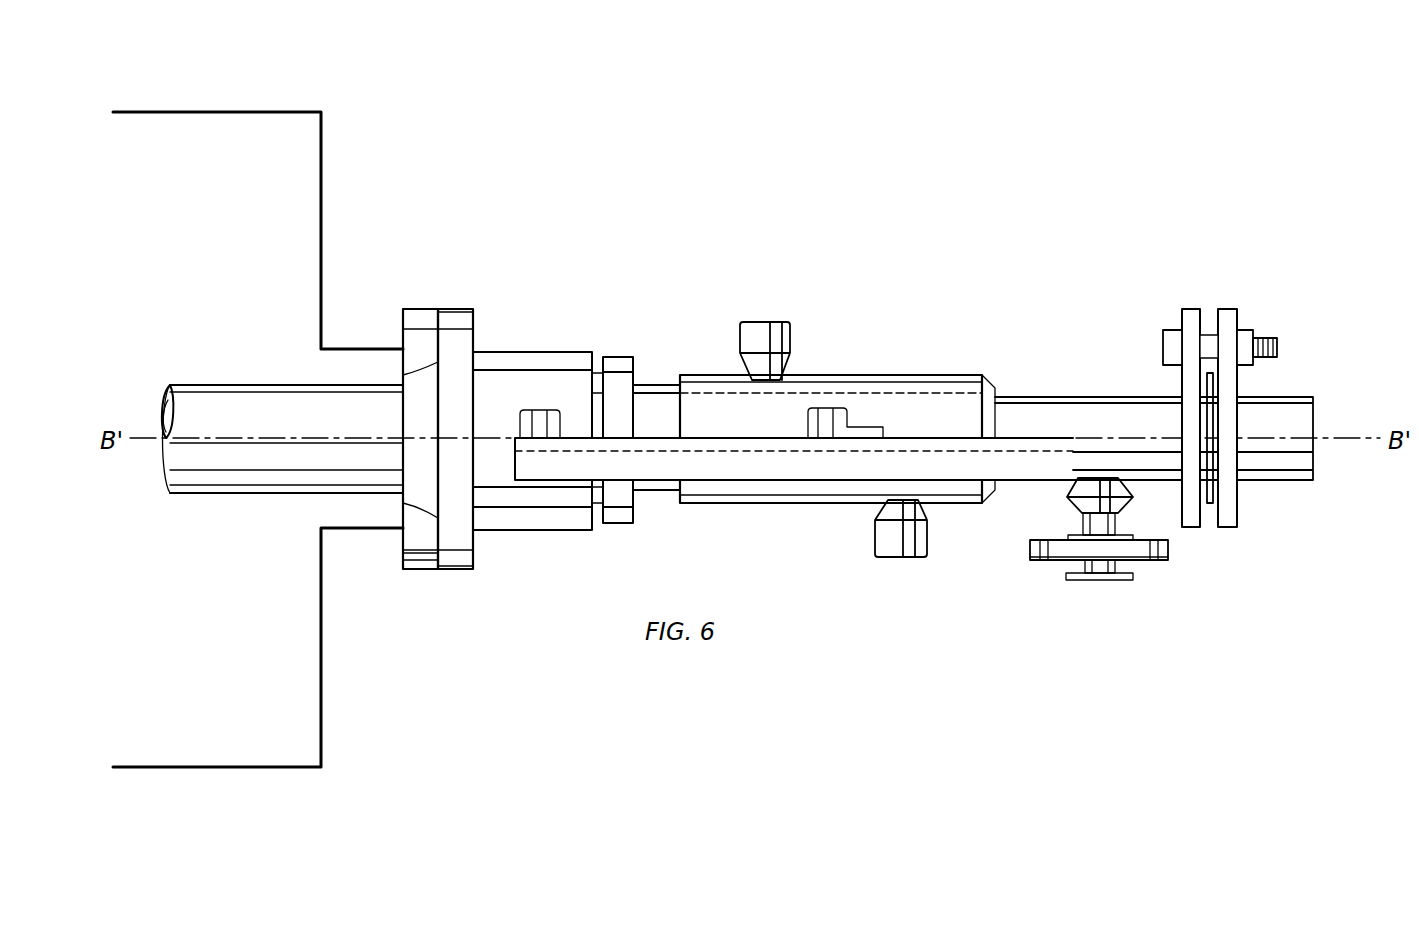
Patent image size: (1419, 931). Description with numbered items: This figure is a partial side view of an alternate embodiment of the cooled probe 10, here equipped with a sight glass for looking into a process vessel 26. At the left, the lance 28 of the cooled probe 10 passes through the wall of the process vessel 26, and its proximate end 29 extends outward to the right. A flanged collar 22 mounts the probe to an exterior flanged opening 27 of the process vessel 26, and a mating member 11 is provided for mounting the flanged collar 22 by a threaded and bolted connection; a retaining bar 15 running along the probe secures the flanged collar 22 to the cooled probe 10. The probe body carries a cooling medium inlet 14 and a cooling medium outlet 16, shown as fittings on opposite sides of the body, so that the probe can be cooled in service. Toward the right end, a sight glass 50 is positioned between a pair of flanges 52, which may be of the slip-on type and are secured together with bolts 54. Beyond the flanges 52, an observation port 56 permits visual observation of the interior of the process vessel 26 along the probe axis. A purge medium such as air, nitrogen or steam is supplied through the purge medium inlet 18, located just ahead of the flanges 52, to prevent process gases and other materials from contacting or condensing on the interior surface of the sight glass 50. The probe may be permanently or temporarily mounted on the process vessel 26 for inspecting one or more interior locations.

The cooled probe 10 is at (1012, 278).
The mating member 11 is at (617, 523).
The cooling medium inlet 14 is at (913, 559).
The retaining bar 15 is at (748, 485).
The cooling medium outlet 16 is at (780, 321).
The purge medium inlet 18 is at (1103, 578).
The flanged collar 22 is at (452, 570).
The process vessel 26 is at (183, 110).
The exterior flanged opening 27 is at (420, 309).
The lance 28 is at (218, 380).
The proximate end 29 is at (655, 384).
The sight glass 50 is at (1212, 487).
The flanges 52 is at (1190, 529).
The bolts 54 is at (1268, 335).
The observation port 56 is at (1318, 428).